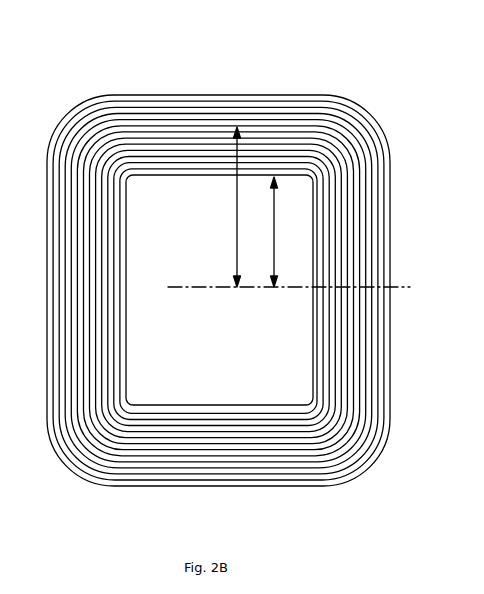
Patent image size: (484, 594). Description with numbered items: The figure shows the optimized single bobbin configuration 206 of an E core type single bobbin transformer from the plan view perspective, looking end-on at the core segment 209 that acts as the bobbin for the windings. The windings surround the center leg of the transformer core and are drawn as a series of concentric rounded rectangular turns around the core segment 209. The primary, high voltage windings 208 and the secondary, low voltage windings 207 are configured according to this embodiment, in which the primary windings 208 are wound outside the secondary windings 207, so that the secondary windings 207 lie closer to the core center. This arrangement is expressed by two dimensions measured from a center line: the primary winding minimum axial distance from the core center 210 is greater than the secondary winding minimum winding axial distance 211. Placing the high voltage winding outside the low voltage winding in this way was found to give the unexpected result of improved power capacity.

The optimized single bobbin configuration 206 is at (220, 264).
The secondary windings 207 is at (348, 208).
The primary windings 208 is at (140, 100).
The core segment 209 is at (135, 293).
The primary winding minimum axial distance from the core center 210 is at (237, 212).
The secondary winding minimum winding axial distance 211 is at (274, 218).